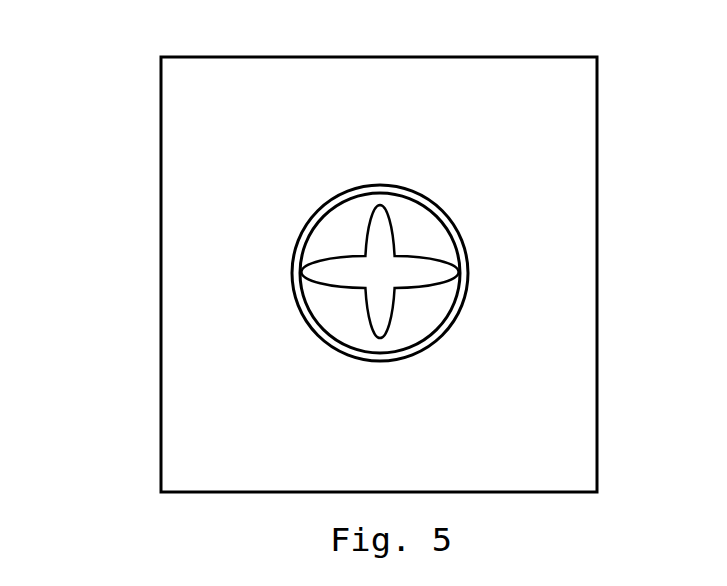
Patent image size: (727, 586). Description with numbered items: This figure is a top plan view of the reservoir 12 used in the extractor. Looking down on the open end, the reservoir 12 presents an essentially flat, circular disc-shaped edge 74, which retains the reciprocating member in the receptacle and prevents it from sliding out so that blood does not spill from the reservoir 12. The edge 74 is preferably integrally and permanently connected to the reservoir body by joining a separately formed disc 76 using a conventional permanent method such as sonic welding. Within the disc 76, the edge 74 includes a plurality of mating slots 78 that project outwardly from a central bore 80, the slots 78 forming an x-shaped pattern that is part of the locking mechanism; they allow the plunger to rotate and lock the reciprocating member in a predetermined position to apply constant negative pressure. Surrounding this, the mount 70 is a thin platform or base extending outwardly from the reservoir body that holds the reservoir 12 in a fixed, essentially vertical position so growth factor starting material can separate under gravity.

The reservoir 12 is at (121, 93).
The mount 70 is at (207, 57).
The edge 74 is at (376, 186).
The disc 76 is at (418, 223).
The mating slots 78 is at (368, 310).
The central bore 80 is at (370, 270).